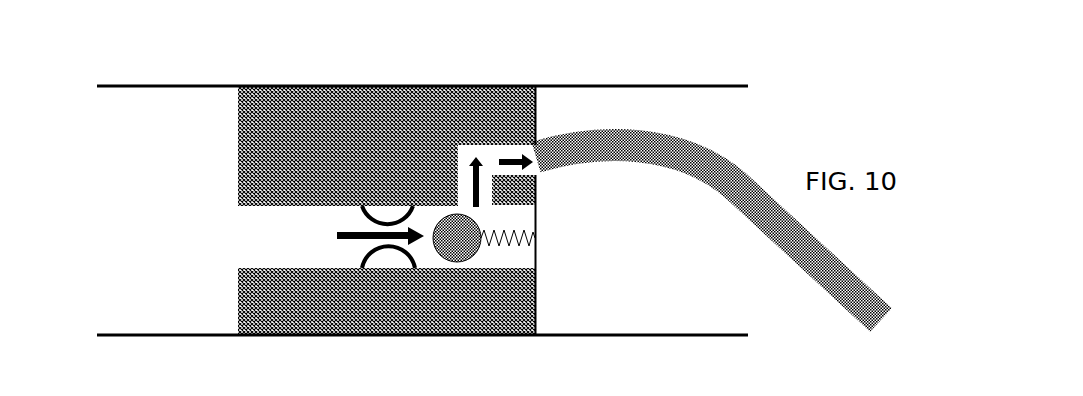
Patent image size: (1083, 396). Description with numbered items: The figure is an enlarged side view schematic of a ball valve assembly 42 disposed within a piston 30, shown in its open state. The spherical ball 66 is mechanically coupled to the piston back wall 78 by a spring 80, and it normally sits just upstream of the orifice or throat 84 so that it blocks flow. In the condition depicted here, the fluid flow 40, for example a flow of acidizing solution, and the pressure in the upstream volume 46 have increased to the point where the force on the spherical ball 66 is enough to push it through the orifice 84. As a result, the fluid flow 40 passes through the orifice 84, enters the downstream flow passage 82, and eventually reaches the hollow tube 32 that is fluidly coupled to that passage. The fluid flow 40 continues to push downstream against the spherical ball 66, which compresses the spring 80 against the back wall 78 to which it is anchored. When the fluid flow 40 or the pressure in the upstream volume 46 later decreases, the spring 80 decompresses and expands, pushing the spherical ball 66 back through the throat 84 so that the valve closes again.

The ball valve assembly 42 is at (245, 66).
The upstream volume 46 is at (186, 228).
The piston 30 is at (373, 103).
The piston back wall 78 is at (536, 217).
The downstream flow passage 82 is at (465, 180).
The orifice 84 is at (350, 212).
The fluid flow 40 is at (337, 238).
The spherical ball 66 is at (463, 257).
The spring 80 is at (536, 237).
The hollow tube 32 is at (789, 228).